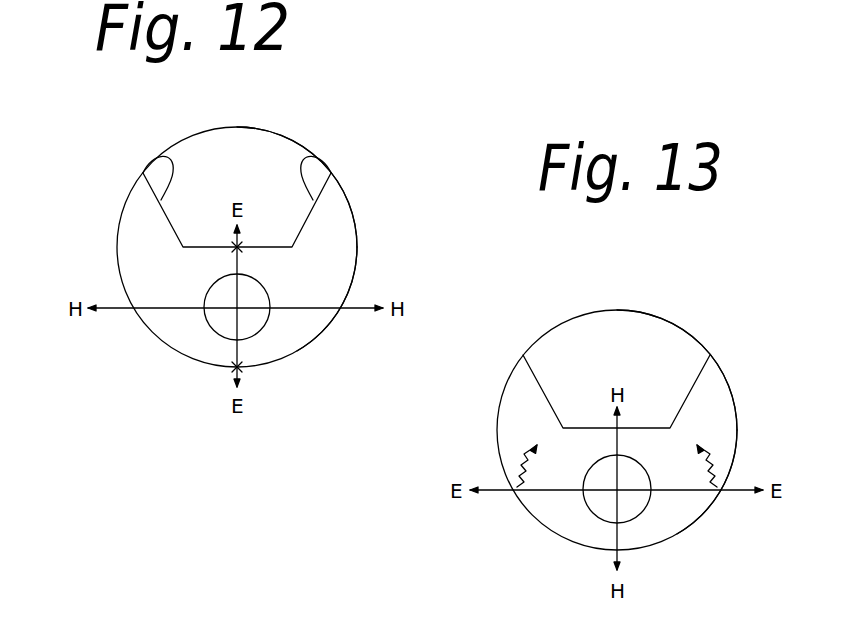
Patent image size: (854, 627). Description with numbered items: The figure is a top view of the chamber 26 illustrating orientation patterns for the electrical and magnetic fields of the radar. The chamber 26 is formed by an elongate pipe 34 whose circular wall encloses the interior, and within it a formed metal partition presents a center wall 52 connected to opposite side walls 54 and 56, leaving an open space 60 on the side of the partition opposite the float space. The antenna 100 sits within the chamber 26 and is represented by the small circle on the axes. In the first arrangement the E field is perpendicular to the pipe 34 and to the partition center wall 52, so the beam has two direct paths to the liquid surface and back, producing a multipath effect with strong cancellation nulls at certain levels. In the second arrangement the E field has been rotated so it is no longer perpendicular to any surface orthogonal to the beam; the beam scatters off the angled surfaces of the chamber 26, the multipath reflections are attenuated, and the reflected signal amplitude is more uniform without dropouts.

In FIG. 12, the chamber 26 is at (117, 195).
In FIG. 13, the chamber 26 is at (657, 278).
In FIG. 12, the elongate pipe 34 is at (281, 136).
In FIG. 13, the elongate pipe 34 is at (716, 357).
In FIG. 12, the center wall 52 is at (265, 247).
In FIG. 13, the center wall 52 is at (638, 428).
In FIG. 12, the side wall 54 is at (167, 153).
In FIG. 12, the side wall 56 is at (315, 157).
In FIG. 12, the open space 60 is at (340, 229).
In FIG. 13, the open space 60 is at (718, 427).
In FIG. 12, the antenna 100 is at (268, 333).
In FIG. 13, the antenna 100 is at (650, 520).